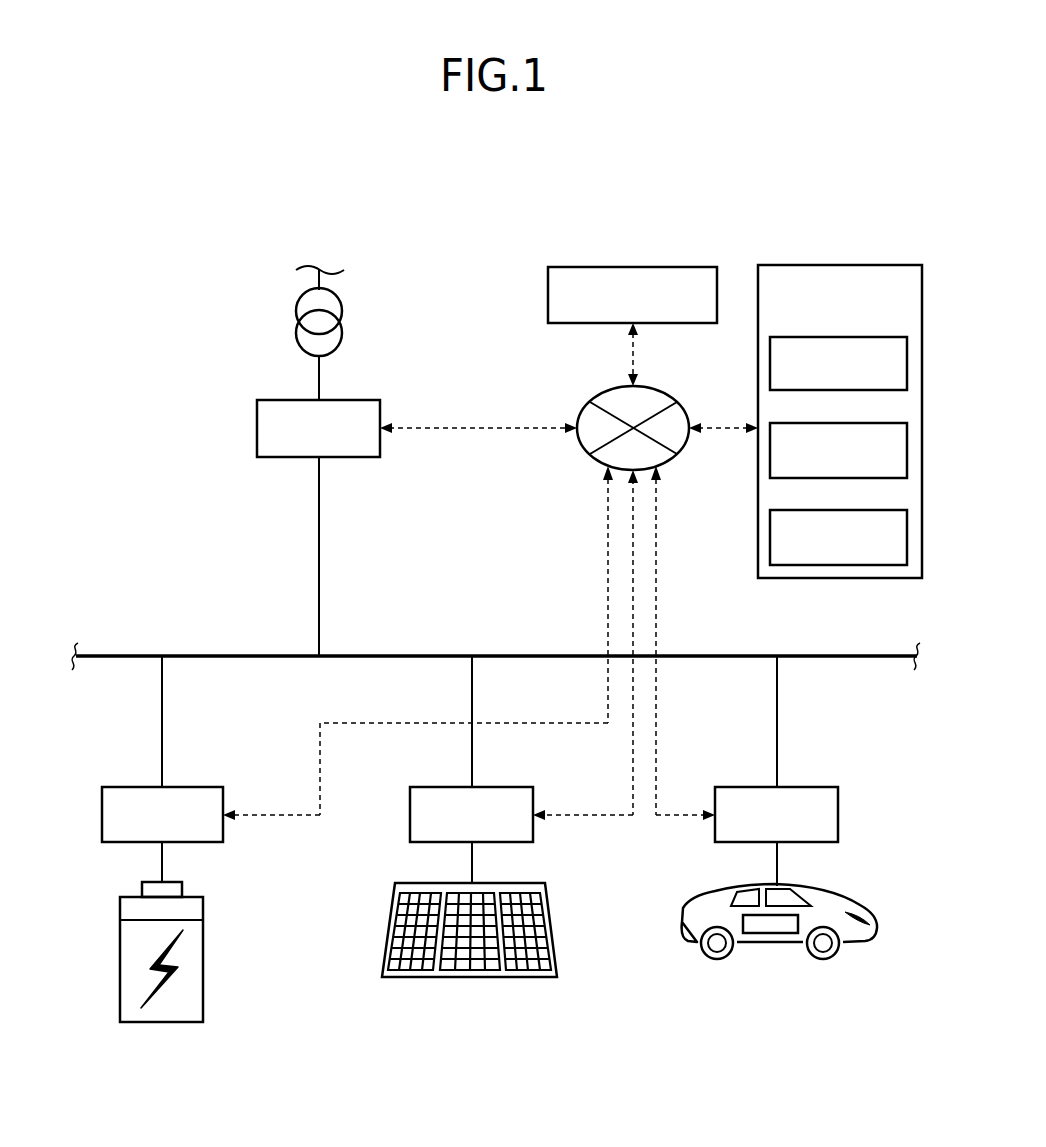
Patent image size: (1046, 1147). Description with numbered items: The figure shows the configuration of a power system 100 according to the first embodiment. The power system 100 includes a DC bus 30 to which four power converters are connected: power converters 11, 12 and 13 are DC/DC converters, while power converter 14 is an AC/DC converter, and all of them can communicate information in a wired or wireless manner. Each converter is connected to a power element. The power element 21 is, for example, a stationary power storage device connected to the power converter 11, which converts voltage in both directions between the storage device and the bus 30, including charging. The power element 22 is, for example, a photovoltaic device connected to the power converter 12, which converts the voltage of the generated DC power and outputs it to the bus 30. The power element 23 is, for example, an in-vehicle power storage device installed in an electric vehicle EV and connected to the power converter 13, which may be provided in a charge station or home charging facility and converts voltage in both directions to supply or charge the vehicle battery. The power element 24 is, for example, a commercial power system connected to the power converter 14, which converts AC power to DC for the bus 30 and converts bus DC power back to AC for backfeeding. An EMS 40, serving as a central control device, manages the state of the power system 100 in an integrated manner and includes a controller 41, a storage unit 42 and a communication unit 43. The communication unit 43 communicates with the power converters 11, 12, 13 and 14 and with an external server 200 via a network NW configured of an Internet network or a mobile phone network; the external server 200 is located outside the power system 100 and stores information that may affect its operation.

The power system 100 is at (738, 214).
The EMS 40 is at (842, 246).
The controller 41 is at (843, 337).
The storage unit 42 is at (843, 423).
The communication unit 43 is at (843, 510).
The external server 200 is at (654, 267).
The network NW is at (666, 391).
The power element 24 is at (365, 310).
The power converter 14 is at (338, 400).
The bus 30 is at (114, 652).
The power converter 11 is at (181, 787).
The power converter 12 is at (491, 787).
The power converter 13 is at (795, 787).
The power element 21 is at (161, 1022).
The power element 22 is at (468, 978).
The power element 23 is at (768, 934).
The electric vehicle EV is at (852, 880).